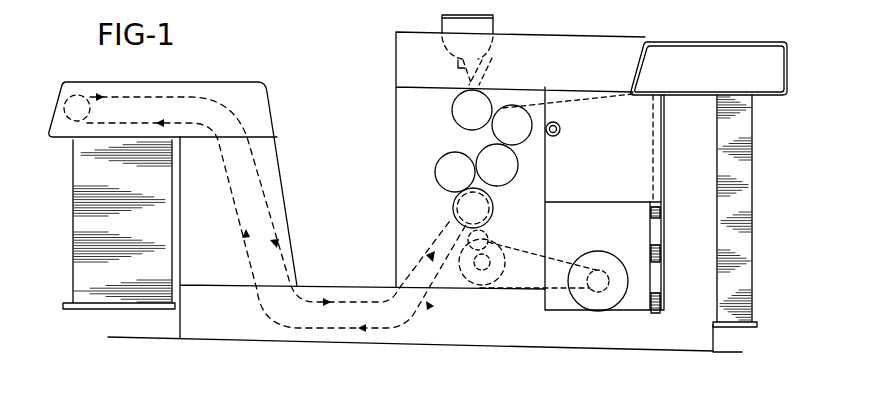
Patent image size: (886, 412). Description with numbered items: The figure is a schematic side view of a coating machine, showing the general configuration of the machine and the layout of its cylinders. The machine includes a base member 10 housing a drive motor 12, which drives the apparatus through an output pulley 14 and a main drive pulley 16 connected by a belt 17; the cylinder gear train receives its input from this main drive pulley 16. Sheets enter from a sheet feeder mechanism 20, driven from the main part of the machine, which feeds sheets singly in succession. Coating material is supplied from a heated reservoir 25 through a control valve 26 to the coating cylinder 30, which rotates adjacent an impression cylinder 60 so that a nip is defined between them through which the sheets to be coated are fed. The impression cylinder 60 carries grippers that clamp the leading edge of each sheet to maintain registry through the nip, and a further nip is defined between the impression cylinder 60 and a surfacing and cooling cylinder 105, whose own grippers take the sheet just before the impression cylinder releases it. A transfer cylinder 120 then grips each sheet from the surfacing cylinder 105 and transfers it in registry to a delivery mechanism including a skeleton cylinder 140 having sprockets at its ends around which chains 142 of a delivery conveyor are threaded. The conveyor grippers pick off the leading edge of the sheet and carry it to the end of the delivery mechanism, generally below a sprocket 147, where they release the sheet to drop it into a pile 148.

The base member 10 is at (437, 331).
The drive motor 12 is at (598, 311).
The output pulley 14 is at (603, 268).
The main drive pulley 16 is at (480, 285).
The belt 17 is at (518, 288).
The sheet feeder mechanism 20 is at (609, 88).
The heated reservoir 25 is at (448, 28).
The control valve 26 is at (462, 64).
The coating cylinder 30 is at (451, 110).
The impression cylinder 60 is at (523, 133).
The surfacing and cooling cylinder 105 is at (502, 178).
The transfer cylinder 120 is at (443, 172).
The skeleton cylinder 140 is at (453, 208).
The chains 142 is at (343, 300).
The sprocket 147 is at (64, 106).
The pile 148 is at (72, 243).